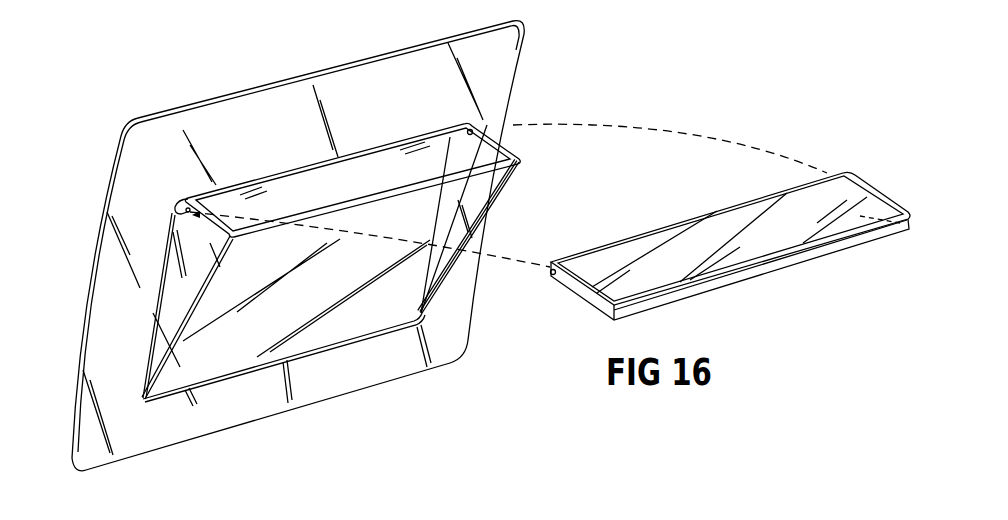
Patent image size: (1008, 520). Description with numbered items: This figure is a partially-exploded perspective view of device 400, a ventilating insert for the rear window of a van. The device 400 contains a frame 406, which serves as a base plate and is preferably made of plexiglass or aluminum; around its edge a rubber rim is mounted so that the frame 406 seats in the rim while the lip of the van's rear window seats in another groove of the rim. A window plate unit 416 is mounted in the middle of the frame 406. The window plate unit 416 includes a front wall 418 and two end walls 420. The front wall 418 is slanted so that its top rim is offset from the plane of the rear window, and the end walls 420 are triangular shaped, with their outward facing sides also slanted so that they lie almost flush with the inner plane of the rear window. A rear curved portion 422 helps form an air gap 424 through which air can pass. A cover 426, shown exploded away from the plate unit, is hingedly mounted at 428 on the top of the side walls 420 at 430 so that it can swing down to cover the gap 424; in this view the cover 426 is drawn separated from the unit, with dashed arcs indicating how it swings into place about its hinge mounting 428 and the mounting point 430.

The device 400 is at (364, 55).
The frame 406 is at (507, 80).
The window plate unit 416 is at (500, 199).
The front wall 418 is at (415, 286).
The end walls 420 is at (521, 162).
The rear curved portion 422 is at (226, 188).
The air gap 424 is at (297, 203).
The cover 426 is at (663, 233).
The hinge mounting 428 is at (178, 203).
The mounting point on side walls 430 is at (552, 277).